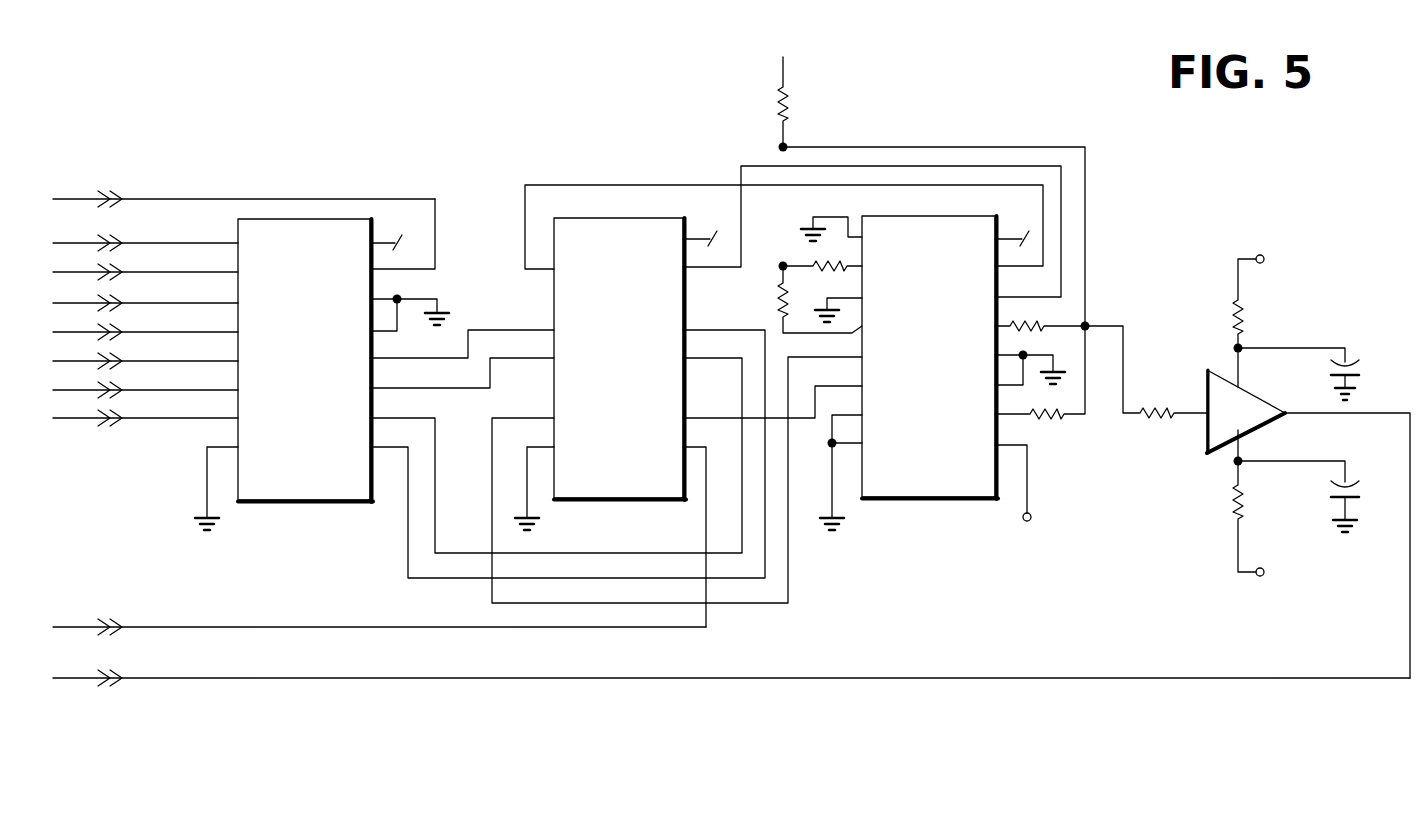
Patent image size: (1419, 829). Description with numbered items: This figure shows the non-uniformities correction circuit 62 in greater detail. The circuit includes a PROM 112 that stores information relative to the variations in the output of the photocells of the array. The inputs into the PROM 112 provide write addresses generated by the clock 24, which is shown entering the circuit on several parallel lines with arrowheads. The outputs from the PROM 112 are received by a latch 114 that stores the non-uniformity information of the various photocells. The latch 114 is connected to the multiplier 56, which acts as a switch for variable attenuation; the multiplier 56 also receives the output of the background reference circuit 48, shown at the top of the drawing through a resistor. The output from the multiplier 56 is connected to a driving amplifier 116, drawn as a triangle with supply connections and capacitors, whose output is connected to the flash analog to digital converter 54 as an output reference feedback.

The clock 24 is at (379, 405).
The flash analog to digital converter 54 is at (731, 670).
The background reference circuit 48 is at (783, 57).
The non-uniformities correction circuit 62 is at (527, 96).
The PROM 112 is at (323, 501).
The latch 114 is at (623, 499).
The first multiplier 56 is at (932, 498).
The driving amplifier 116 is at (1207, 445).